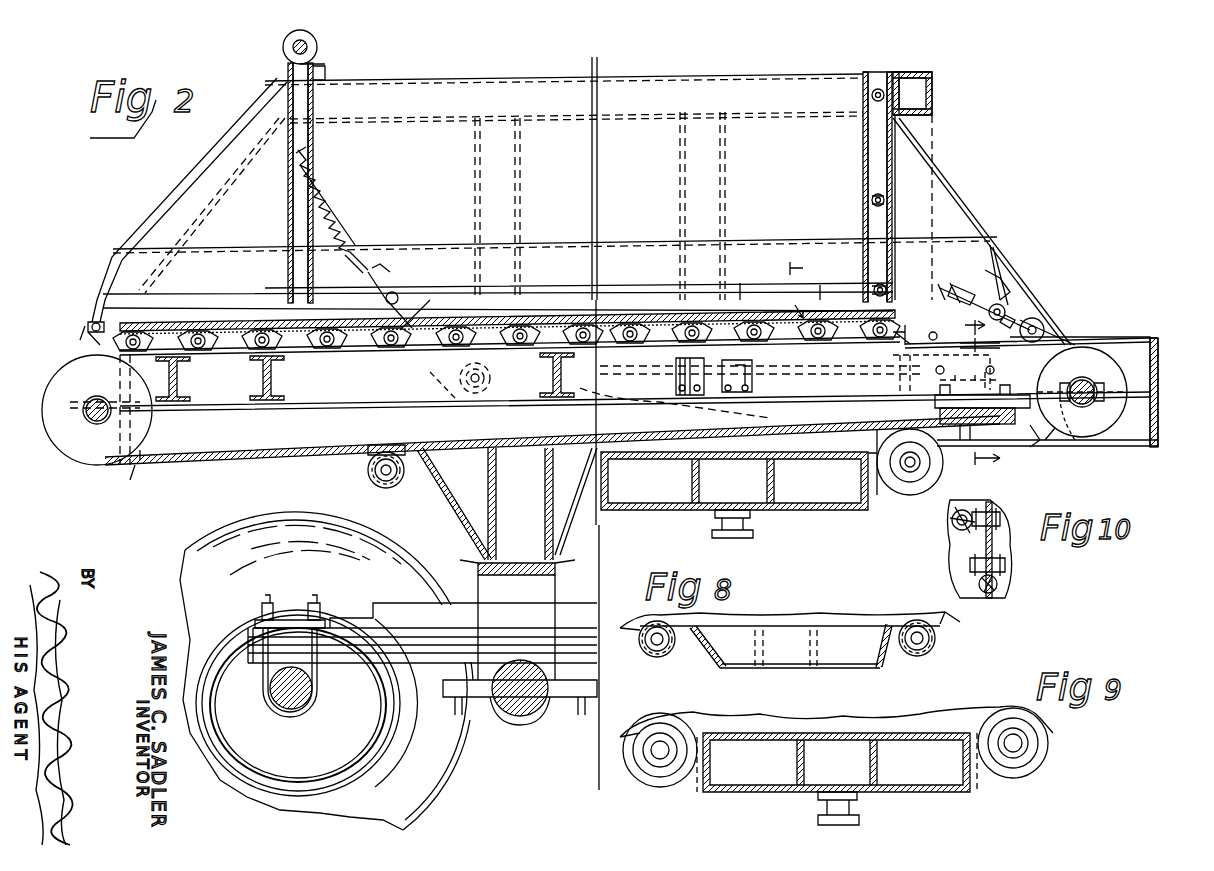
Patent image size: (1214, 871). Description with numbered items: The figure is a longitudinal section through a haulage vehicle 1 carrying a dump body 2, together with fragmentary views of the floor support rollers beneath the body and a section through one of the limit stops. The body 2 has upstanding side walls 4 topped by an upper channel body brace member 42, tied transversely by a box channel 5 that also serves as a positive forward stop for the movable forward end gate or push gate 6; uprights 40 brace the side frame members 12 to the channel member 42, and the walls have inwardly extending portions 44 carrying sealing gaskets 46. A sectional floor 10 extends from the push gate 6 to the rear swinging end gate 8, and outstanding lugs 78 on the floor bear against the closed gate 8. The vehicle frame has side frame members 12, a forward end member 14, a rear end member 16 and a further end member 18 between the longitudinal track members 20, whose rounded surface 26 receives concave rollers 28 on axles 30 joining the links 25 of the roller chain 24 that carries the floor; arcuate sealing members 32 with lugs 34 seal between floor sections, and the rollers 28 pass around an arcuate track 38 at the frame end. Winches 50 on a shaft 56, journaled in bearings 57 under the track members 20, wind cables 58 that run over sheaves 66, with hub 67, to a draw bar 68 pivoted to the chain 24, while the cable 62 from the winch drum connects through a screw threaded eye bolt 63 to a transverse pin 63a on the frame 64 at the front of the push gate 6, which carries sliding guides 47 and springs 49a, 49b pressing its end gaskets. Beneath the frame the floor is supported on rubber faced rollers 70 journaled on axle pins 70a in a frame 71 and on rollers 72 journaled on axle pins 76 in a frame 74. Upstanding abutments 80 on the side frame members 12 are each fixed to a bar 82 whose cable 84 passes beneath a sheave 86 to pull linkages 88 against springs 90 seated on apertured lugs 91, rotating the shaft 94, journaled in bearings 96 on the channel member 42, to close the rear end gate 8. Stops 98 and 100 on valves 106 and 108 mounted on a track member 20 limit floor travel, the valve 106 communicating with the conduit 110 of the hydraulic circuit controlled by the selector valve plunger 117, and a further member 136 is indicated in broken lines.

In FIG. 2, the haulage vehicle 1 is at (518, 736).
In FIG. 2, the body 2 is at (739, 72).
In FIG. 2, the side walls 4 is at (428, 118).
In FIG. 2, the box channel 5 is at (905, 72).
In FIG. 2, the forward end gate or push gate 6 is at (848, 110).
In FIG. 2, the rear end gate 8 is at (290, 112).
In FIG. 2, the sectional floor 10 is at (910, 363).
In FIG. 2, the side frame members 12 is at (1148, 402).
In FIG. 8, the side frame members 12 is at (878, 614).
In FIG. 9, the side frame members 12 is at (958, 724).
In FIG. 2, the forward end member 14 is at (1135, 448).
In FIG. 2, the end member 16 is at (135, 480).
In FIG. 2, the further end member 18 is at (190, 395).
In FIG. 2, the track members 20 is at (395, 410).
In FIG. 10, the track members 20 is at (1010, 512).
In FIG. 2, the roller chain 24 is at (358, 352).
In FIG. 2, the links 25 is at (255, 350).
In FIG. 2, the rounded surface 26 is at (412, 350).
In FIG. 2, the concave rollers 28 is at (518, 348).
In FIG. 2, the axles 30 is at (330, 350).
In FIG. 2, the arcuate sealing member 32 is at (625, 300).
In FIG. 2, the lugs 34 is at (438, 305).
In FIG. 2, the arcuate track 38 is at (78, 465).
In FIG. 2, the uprights 40 is at (528, 208).
In FIG. 2, the upper channel body brace member 42 is at (643, 80).
In FIG. 2, the inwardly extending portions 44 is at (550, 292).
In FIG. 2, the sealing gasket 46 is at (742, 295).
In FIG. 2, the sliding guides 47 is at (865, 200).
In FIG. 2, the upper bolt connection 49a is at (886, 200).
In FIG. 2, the lower bolt connection 49b is at (878, 285).
In FIG. 2, the winches 50 is at (1082, 405).
In FIG. 2, the shaft 56 is at (1092, 390).
In FIG. 2, the bearings 57 is at (1052, 445).
In FIG. 2, the cables 58 is at (370, 455).
In FIG. 2, the cable 62 is at (1043, 325).
In FIG. 2, the screw threaded eye bolt 63 is at (1003, 295).
In FIG. 2, the transverse pin 63a is at (982, 265).
In FIG. 2, the frame 64 is at (952, 205).
In FIG. 2, the sheaves 66 is at (60, 445).
In FIG. 2, the front drum shaft 67 is at (85, 408).
In FIG. 2, the draw bar 68 is at (92, 330).
In FIG. 2, the rollers 70 is at (388, 488).
In FIG. 8, the rollers 70 is at (652, 657).
In FIG. 2, the axle pins 70a is at (375, 474).
In FIG. 8, the axle pins 70a is at (648, 644).
In FIG. 2, the frame 71 is at (465, 550).
In FIG. 8, the frame 71 is at (750, 672).
In FIG. 2, the rollers 72 is at (912, 490).
In FIG. 9, the rollers 72 is at (658, 780).
In FIG. 2, the frame 74 is at (648, 510).
In FIG. 9, the frame 74 is at (940, 795).
In FIG. 2, the axle pins 76 is at (916, 466).
In FIG. 9, the axle pins 76 is at (655, 758).
In FIG. 2, the lugs 78 is at (290, 305).
In FIG. 2, the abutments 80 is at (896, 372).
In FIG. 2, the bar 82 is at (800, 376).
In FIG. 2, the cable 84 is at (625, 372).
In FIG. 2, the sheaves 86 is at (462, 392).
In FIG. 2, the linkages 88 is at (390, 275).
In FIG. 2, the springs 90 is at (350, 208).
In FIG. 2, the apertured lugs 91 is at (368, 246).
In FIG. 2, the shaft 94 is at (316, 48).
In FIG. 2, the bearings 96 is at (326, 72).
In FIG. 2, the stop 98 is at (912, 334).
In FIG. 10, the stop 98 is at (955, 525).
In FIG. 2, the stop 100 is at (935, 404).
In FIG. 10, the stop 100 is at (999, 584).
In FIG. 2, the valve 106 is at (990, 372).
In FIG. 10, the valve 106 is at (990, 510).
In FIG. 2, the valve 108 is at (1003, 424).
In FIG. 10, the valve 108 is at (983, 572).
In FIG. 2, the conduit 110 is at (972, 348).
In FIG. 2, the plunger 117 is at (818, 300).
In FIG. 2, the drive rod 136 is at (740, 415).